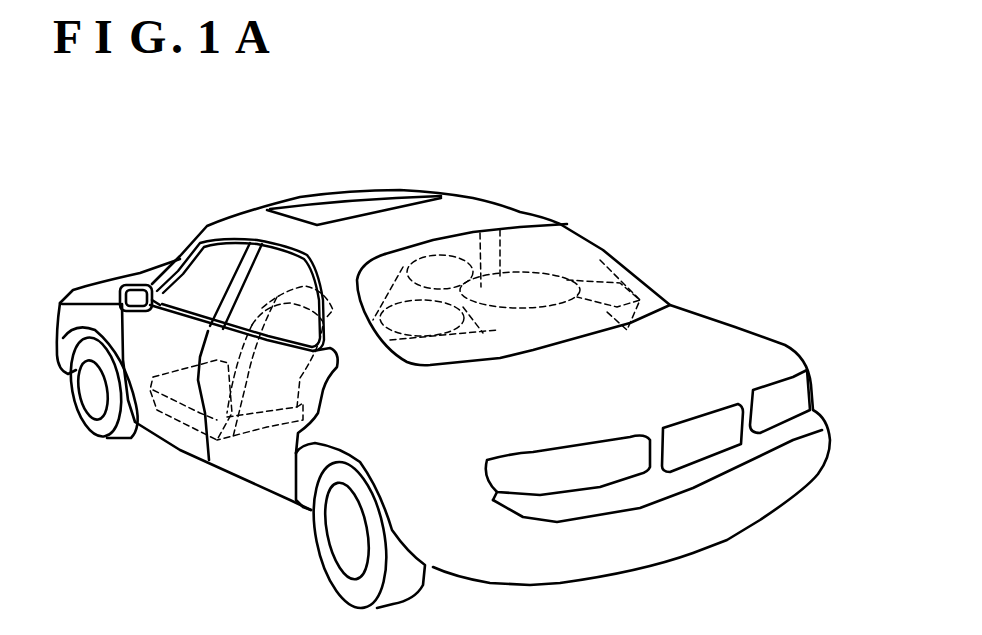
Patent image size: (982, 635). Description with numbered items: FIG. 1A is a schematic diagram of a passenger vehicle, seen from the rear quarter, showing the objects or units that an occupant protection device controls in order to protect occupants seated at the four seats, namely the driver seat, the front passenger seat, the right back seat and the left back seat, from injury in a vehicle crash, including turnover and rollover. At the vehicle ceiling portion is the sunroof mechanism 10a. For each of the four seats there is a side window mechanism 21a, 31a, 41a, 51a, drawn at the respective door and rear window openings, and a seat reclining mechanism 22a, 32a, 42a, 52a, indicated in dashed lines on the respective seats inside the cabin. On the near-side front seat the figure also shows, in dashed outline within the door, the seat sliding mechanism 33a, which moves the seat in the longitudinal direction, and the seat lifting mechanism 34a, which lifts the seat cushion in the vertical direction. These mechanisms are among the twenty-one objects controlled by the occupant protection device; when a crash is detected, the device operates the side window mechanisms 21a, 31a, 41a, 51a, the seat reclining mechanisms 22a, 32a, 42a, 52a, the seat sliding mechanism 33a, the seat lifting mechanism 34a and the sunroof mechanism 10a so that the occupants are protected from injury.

The sunroof mechanism 10a is at (336, 203).
The side window mechanism 21a is at (470, 250).
The seat reclining mechanism 22a is at (436, 252).
The side window mechanism 31a is at (190, 280).
The seat reclining mechanism 32a is at (293, 373).
The seat sliding mechanism 33a is at (167, 420).
The seat lifting mechanism 34a is at (144, 442).
The side window mechanism 41a is at (607, 250).
The seat reclining mechanism 42a is at (622, 327).
The side window mechanism 51a is at (297, 252).
The seat reclining mechanism 52a is at (487, 330).